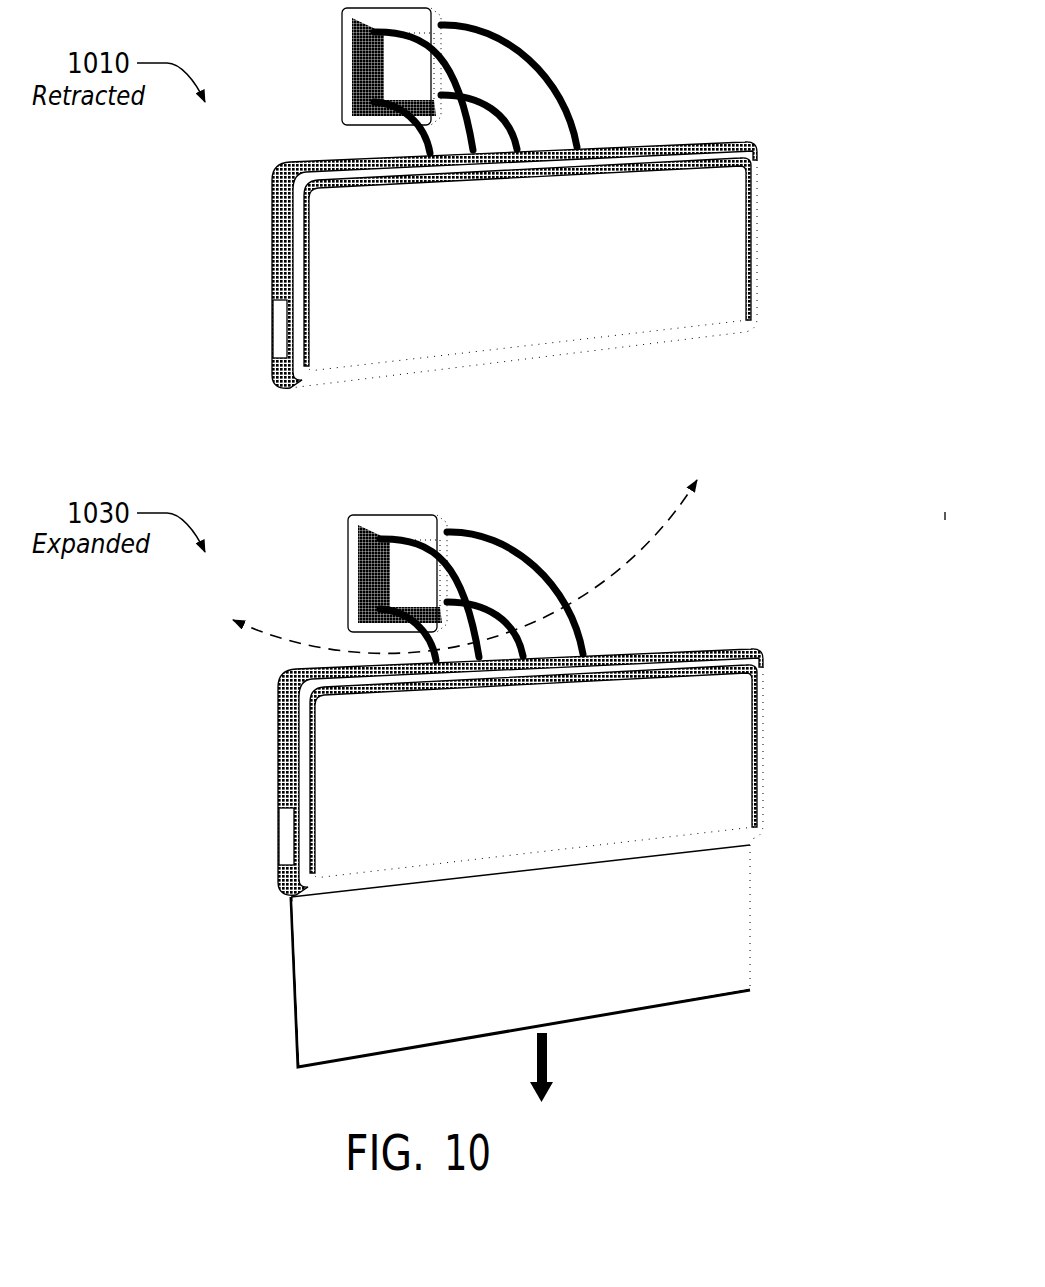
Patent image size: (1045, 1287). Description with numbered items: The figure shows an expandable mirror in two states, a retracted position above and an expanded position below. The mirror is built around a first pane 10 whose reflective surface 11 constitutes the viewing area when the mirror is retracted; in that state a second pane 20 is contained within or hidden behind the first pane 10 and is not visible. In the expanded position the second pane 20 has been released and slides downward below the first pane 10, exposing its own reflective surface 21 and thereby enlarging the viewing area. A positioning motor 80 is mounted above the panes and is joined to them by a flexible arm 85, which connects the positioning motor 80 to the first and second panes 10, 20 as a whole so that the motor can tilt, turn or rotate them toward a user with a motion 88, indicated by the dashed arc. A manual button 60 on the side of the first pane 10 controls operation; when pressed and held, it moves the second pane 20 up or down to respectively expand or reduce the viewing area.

The first pane 10 is at (713, 136).
The reflective surface 11 is at (717, 269).
The second pane 20 is at (716, 999).
The reflective surface 21 is at (722, 933).
The manual button 60 is at (278, 325).
The positioning motor 80 is at (338, 40).
The flexible arm 85 is at (497, 66).
The motion 88 is at (465, 566).